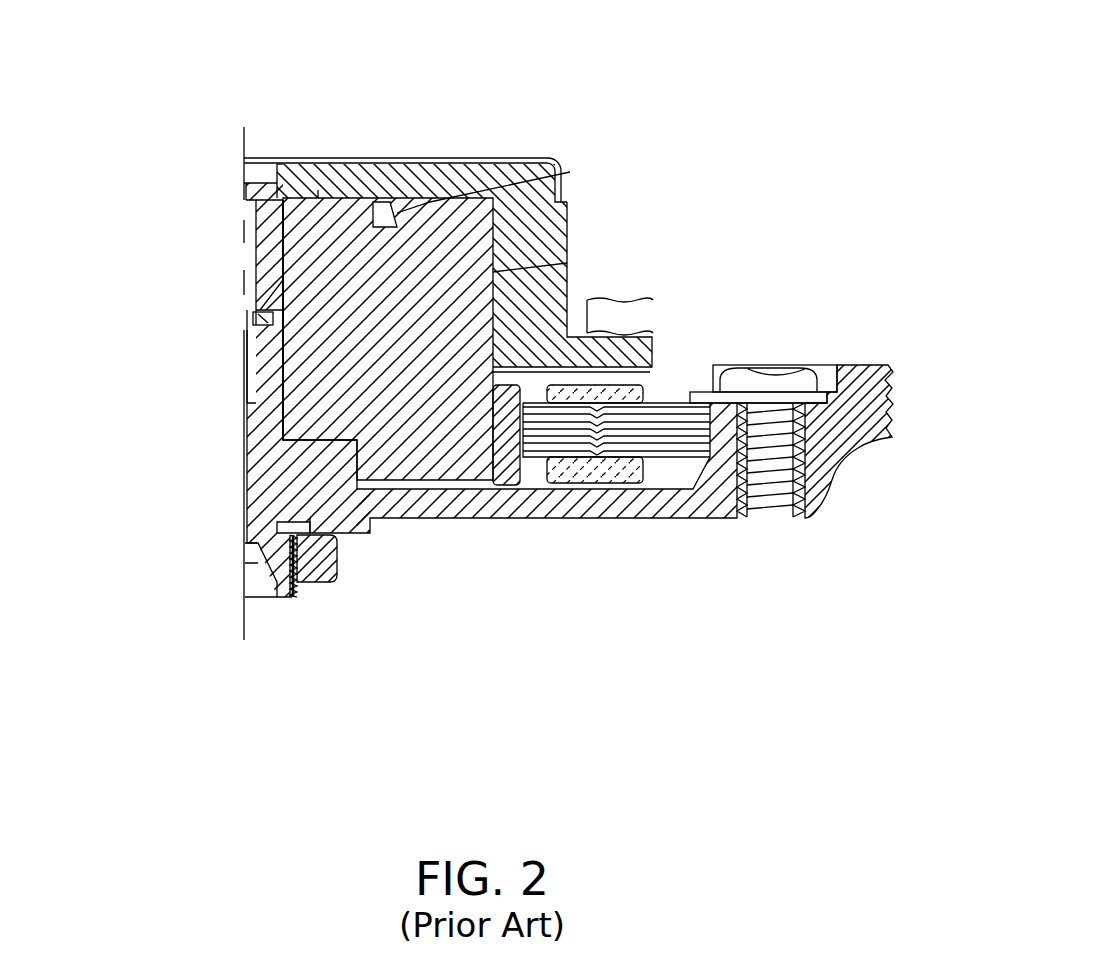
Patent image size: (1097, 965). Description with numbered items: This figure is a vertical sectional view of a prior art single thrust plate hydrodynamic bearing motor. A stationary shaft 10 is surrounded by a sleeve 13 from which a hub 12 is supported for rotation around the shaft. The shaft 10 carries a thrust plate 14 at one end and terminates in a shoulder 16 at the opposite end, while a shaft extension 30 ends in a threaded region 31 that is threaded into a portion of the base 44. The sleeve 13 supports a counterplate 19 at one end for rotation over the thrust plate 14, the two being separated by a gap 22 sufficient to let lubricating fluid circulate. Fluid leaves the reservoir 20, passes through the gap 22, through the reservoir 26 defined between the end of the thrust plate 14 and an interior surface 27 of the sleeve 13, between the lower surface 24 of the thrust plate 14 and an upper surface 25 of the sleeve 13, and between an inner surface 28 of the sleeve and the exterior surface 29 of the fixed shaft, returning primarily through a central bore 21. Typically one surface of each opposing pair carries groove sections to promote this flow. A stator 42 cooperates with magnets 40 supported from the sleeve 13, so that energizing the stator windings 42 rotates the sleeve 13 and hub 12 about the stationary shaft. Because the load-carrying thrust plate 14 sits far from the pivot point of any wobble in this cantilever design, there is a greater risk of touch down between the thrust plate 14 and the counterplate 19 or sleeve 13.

The stationary shaft 10 is at (245, 492).
The hub 12 is at (307, 283).
The sleeve 13 is at (452, 158).
The thrust plate 14 is at (330, 210).
The shoulder 16 is at (333, 467).
The counterplate 19 is at (287, 183).
The reservoir 20 is at (242, 236).
The central bore 21 is at (256, 333).
The gap 22 is at (322, 195).
The lower surface of the thrust plate 24 is at (278, 227).
The upper surface of the sleeve 25 is at (260, 310).
The reservoir 26 is at (493, 217).
The interior surface of the sleeve 27 is at (547, 158).
The inner surface of the sleeve 28 is at (567, 263).
The exterior surface of the fixed shaft 29 is at (257, 328).
The shaft extension 30 is at (277, 585).
The threaded region 31 is at (302, 578).
The magnets 40 is at (508, 460).
The stator 42 is at (640, 387).
The base 44 is at (328, 583).